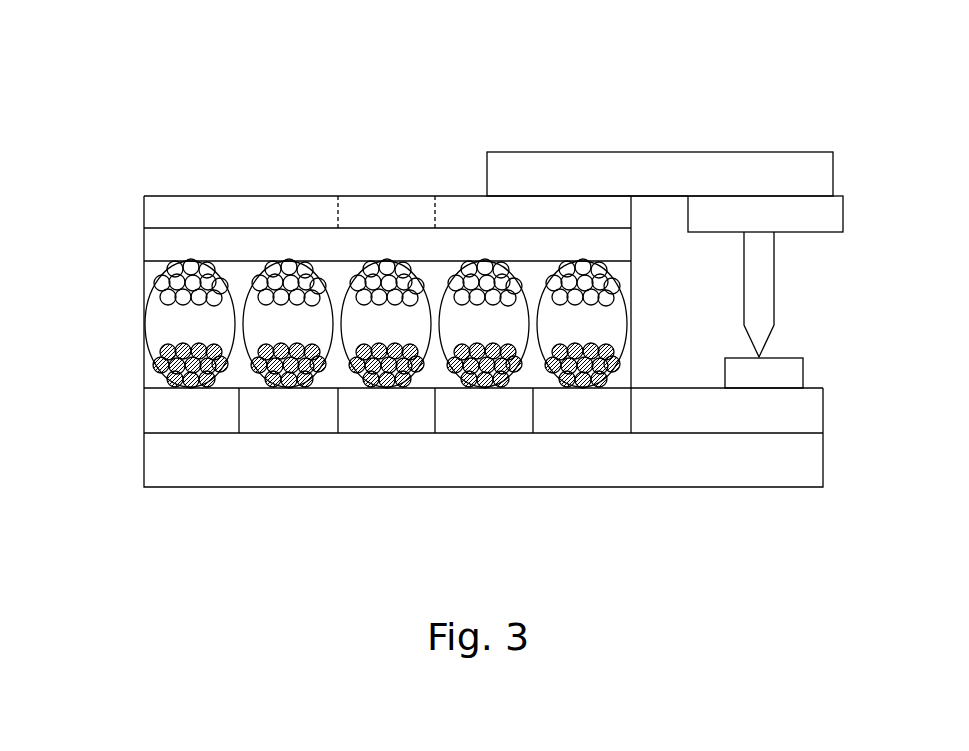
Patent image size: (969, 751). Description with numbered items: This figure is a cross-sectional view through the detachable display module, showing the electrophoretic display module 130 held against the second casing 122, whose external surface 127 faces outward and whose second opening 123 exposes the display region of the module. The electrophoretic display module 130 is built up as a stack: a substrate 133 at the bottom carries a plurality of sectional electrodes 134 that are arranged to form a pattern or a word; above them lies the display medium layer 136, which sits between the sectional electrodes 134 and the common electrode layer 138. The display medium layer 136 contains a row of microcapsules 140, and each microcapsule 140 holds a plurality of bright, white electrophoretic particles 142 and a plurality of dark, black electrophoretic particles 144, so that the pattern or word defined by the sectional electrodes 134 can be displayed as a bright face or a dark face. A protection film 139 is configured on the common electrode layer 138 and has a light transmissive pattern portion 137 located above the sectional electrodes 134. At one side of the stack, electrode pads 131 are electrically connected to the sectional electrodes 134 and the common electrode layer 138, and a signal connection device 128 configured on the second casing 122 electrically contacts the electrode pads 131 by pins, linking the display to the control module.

The second casing 122 is at (622, 175).
The second opening 123 is at (465, 158).
The external surface 127 is at (728, 150).
The signal connection device 128 is at (816, 216).
The electrophoretic display module 130 is at (798, 533).
The electrode pads 131 is at (767, 370).
The substrate 133 is at (698, 455).
The sectional electrodes 134 is at (392, 398).
The display medium layer 136 is at (333, 366).
The light transmissive pattern portion 137 is at (380, 195).
The common electrode layer 138 is at (527, 240).
The protection film 139 is at (245, 208).
The microcapsules 140 is at (160, 328).
The bright electrophoretic particles 142 is at (160, 283).
The dark electrophoretic particles 144 is at (157, 362).